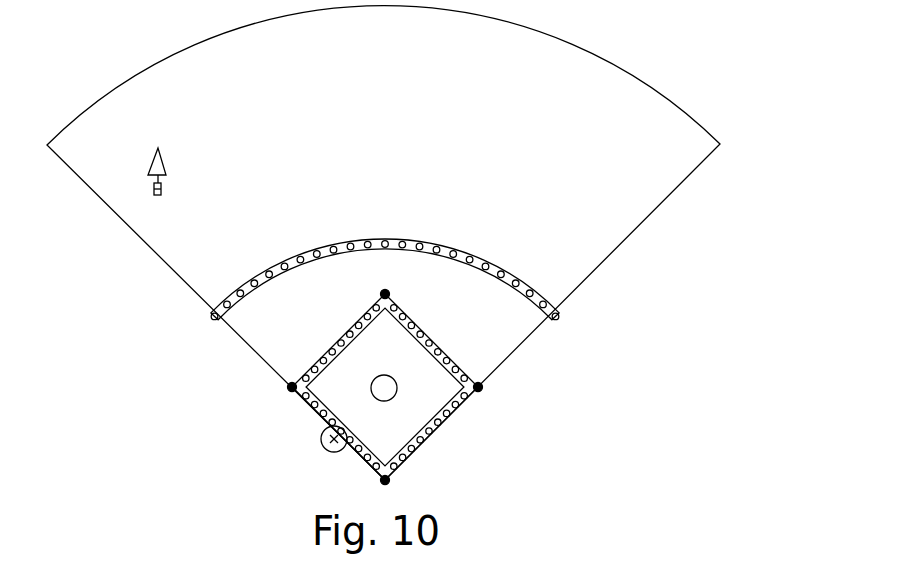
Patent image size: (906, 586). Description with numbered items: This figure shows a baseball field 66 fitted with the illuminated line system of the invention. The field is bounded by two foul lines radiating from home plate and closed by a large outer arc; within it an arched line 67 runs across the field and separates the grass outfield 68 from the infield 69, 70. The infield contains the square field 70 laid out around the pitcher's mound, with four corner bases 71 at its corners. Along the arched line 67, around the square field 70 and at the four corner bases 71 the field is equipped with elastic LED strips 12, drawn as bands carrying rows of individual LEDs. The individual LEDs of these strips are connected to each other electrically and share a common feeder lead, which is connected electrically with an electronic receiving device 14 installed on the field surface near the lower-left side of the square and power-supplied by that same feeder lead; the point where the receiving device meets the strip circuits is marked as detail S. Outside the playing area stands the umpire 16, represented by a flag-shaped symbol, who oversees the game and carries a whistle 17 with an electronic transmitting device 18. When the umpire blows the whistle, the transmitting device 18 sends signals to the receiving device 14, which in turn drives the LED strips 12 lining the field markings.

The elastic LED strips 12 is at (253, 290).
The electronic receiving device 14 is at (323, 435).
The detail of connection of the electronic receiving device S is at (337, 447).
The umpire 16 is at (157, 158).
The whistle 17 is at (156, 195).
The electronic transmitting device 18 is at (158, 176).
The baseball field 66 is at (420, 357).
The arched line 67 is at (492, 265).
The grass outfield 68 is at (650, 149).
The infield 69 is at (433, 370).
The square field around the pitcher's mound 70 is at (478, 388).
The corner bases 71 is at (397, 323).